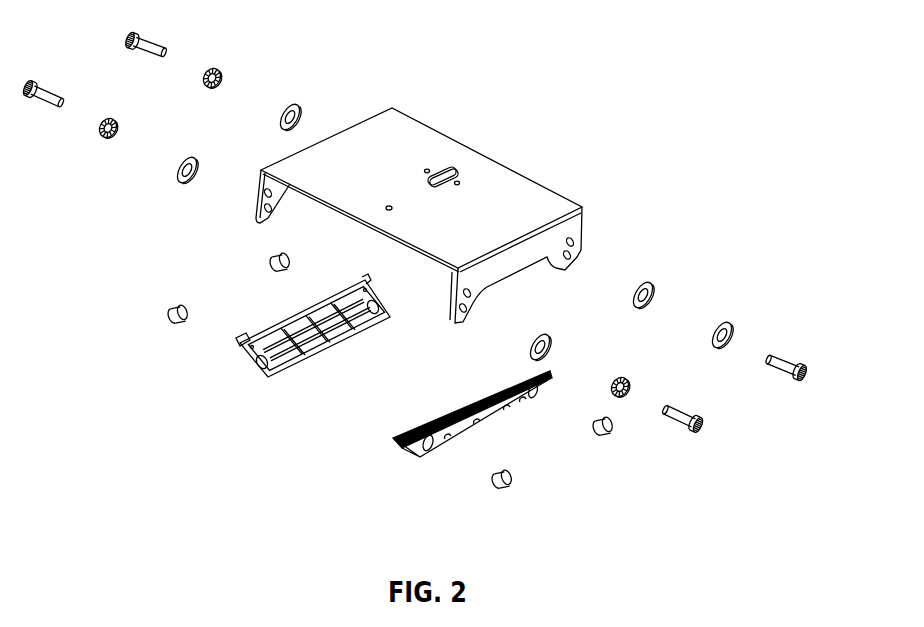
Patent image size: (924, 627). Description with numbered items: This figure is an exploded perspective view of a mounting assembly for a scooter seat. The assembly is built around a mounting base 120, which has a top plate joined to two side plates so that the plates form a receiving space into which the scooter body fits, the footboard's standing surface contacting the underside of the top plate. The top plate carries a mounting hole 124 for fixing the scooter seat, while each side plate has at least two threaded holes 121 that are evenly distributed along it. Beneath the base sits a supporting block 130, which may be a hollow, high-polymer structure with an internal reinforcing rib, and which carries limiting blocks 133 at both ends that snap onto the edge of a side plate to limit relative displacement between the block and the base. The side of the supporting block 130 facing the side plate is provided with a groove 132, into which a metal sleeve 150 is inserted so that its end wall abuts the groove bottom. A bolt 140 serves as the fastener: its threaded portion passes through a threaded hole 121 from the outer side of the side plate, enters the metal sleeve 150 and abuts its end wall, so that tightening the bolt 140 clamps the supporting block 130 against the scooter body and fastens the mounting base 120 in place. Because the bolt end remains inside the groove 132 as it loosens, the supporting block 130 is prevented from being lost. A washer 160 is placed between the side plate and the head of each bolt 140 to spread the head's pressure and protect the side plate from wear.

The mounting base 120 is at (485, 188).
The threaded hole 121 is at (578, 247).
The mounting hole 124 is at (458, 183).
The supporting block 130 is at (247, 355).
The groove 132 is at (535, 393).
The limiting block 133 is at (240, 345).
The bolt 140 is at (807, 378).
The metal sleeve 150 is at (510, 480).
The washer 160 is at (723, 325).